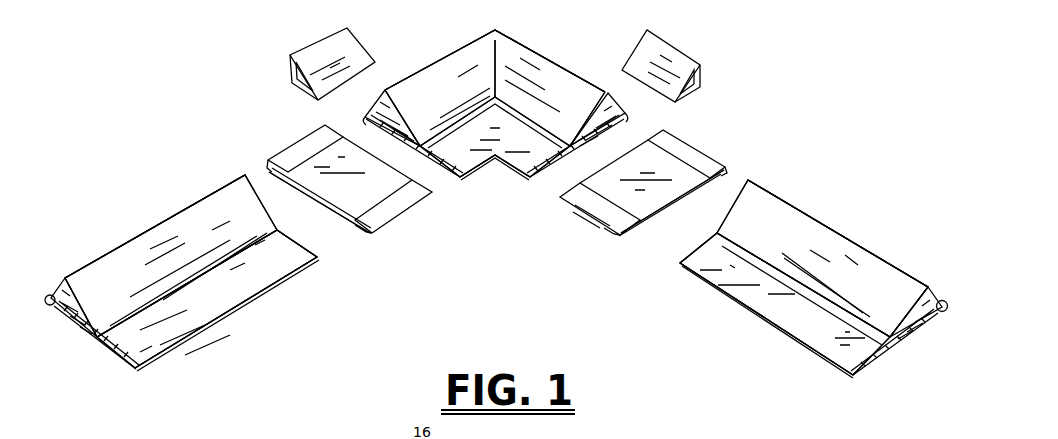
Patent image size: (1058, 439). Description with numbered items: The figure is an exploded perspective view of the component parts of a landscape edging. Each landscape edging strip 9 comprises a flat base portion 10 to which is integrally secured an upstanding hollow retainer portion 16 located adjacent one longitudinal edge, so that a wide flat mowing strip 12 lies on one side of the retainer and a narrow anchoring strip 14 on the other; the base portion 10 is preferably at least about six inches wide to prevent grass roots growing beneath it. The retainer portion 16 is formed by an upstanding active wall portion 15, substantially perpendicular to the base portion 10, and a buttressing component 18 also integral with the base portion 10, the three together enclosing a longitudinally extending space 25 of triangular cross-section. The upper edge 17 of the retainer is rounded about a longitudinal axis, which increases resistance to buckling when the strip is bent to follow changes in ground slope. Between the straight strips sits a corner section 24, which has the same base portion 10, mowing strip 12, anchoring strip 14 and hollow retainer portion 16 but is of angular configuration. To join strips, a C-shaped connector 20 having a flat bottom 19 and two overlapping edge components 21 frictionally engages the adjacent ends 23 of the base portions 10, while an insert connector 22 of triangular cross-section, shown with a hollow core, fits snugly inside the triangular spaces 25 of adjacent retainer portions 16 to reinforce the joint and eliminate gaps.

The landscape edging strip 9 is at (108, 243).
The base portion 10 is at (114, 367).
The mowing strip 12 is at (272, 275).
The anchoring strip 14 is at (49, 307).
The upstanding active wall portion 15 is at (50, 296).
The hollow retainer portion 16 is at (78, 254).
The upper edge 17 is at (210, 194).
The buttressing component 18 is at (231, 228).
The flat bottom 19 is at (340, 222).
The C-shaped connector 20 is at (364, 205).
The overlapping edge components 21 is at (290, 149).
The insert connector 22 is at (343, 53).
The ends 23 is at (293, 241).
The corner section 24 is at (470, 35).
The enclosed space 25 is at (75, 329).